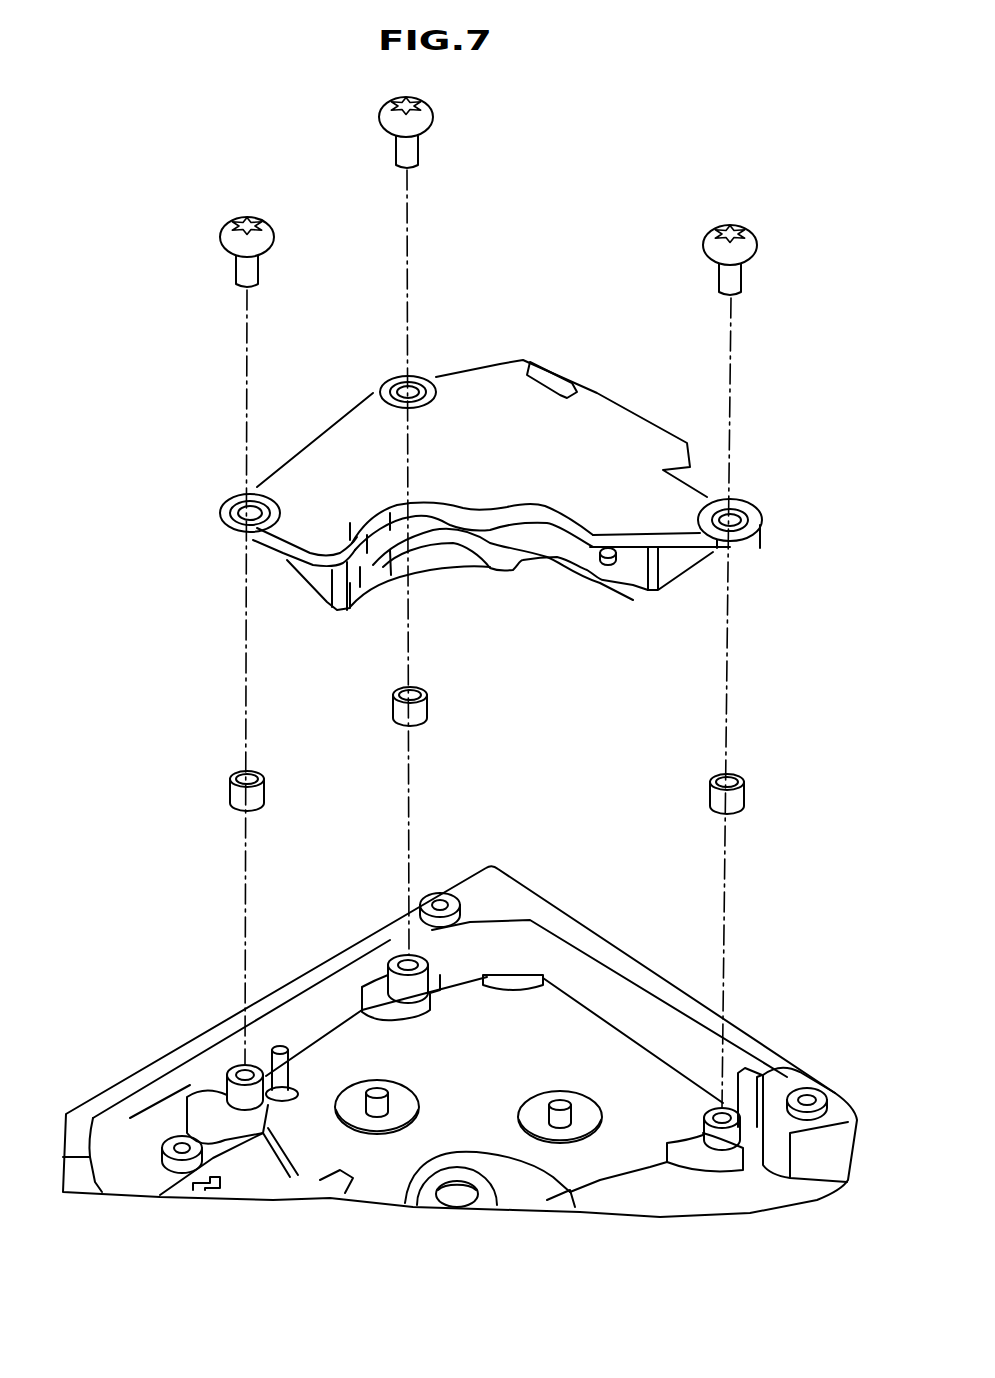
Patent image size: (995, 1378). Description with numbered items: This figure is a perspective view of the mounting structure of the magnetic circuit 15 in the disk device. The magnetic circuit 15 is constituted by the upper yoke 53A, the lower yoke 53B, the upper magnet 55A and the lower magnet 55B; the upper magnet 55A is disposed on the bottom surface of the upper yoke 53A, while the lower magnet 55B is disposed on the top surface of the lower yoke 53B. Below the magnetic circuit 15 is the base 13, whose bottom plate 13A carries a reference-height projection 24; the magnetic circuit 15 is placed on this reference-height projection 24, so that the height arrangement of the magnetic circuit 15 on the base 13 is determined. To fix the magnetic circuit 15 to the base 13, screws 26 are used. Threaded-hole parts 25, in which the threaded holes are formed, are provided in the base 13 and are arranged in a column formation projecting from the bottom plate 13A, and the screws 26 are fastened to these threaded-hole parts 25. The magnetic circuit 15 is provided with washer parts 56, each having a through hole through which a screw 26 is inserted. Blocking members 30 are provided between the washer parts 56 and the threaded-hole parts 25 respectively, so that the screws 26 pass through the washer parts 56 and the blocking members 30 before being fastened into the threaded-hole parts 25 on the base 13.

The base 13 is at (454, 1028).
The bottom plate 13A is at (652, 1100).
The magnetic circuit 15 is at (495, 478).
The reference-height projection 24 is at (377, 1085).
The threaded-hole parts 25 is at (405, 957).
The screws 26 is at (395, 146).
The blocking members 30 is at (393, 697).
The upper yoke 53A is at (483, 398).
The lower yoke 53B is at (528, 565).
The upper magnet 55A is at (392, 530).
The lower magnet 55B is at (437, 545).
The washer parts 56 is at (395, 377).